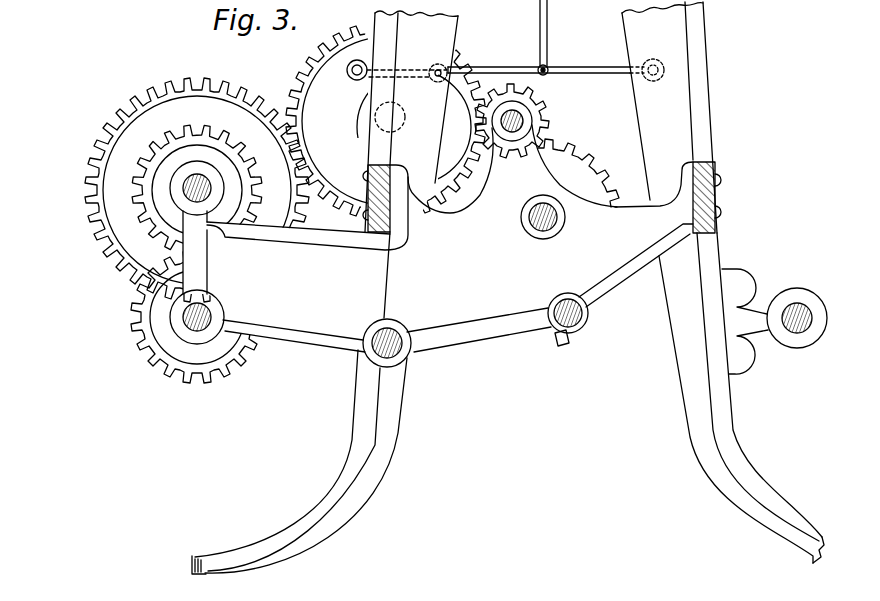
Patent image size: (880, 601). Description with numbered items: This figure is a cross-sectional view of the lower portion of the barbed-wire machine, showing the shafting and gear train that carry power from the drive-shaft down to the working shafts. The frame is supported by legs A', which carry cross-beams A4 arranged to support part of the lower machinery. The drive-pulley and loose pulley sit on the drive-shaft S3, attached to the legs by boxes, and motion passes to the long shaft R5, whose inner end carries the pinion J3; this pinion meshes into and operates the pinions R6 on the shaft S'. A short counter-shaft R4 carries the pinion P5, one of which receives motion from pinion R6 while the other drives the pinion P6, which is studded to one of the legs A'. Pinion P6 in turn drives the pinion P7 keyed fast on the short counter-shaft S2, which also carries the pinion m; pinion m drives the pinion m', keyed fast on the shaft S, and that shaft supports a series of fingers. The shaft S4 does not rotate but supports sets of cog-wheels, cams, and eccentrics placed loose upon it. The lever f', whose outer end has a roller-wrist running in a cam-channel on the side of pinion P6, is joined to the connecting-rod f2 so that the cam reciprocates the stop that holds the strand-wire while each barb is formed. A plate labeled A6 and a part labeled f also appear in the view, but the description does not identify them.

The legs A' is at (508, 288).
The cross-beams A4 is at (392, 175).
The frame plate A6 is at (438, 238).
The pin f is at (388, 75).
The lever f' is at (556, 65).
The connecting-rod f2 is at (555, 37).
The pinion J3 is at (572, 345).
The pinion m is at (197, 190).
The pinion m' is at (197, 317).
The pinion P5 is at (546, 126).
The pinion P6 is at (386, 121).
The pinion P7 is at (150, 191).
The short counter-shaft R4 is at (522, 115).
The shaft R5 is at (552, 309).
The pinions R6 is at (578, 173).
The shaft S is at (208, 317).
The shaft S' is at (529, 220).
The short counter-shaft S2 is at (197, 191).
The drive-shaft S3 is at (793, 303).
The shaft S4 is at (396, 337).